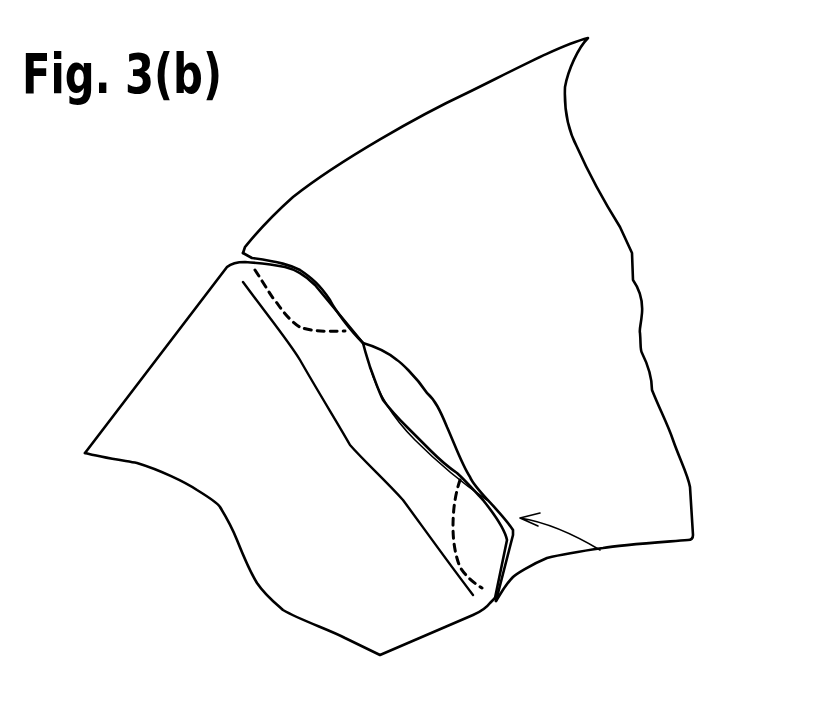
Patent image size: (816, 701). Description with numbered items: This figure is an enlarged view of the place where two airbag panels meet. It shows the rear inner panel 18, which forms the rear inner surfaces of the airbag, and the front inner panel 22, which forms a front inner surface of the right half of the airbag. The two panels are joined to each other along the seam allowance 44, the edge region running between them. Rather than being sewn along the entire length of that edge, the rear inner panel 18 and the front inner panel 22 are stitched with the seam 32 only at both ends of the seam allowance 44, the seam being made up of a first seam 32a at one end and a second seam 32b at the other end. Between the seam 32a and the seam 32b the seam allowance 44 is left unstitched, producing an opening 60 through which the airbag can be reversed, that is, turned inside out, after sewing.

The rear inner panel 18 is at (138, 403).
The front inner panel 22 is at (557, 162).
The seam 32 is at (355, 432).
The seam 32a is at (317, 340).
The seam 32b is at (455, 516).
The seam allowance 44 is at (600, 550).
The opening 60 is at (407, 390).